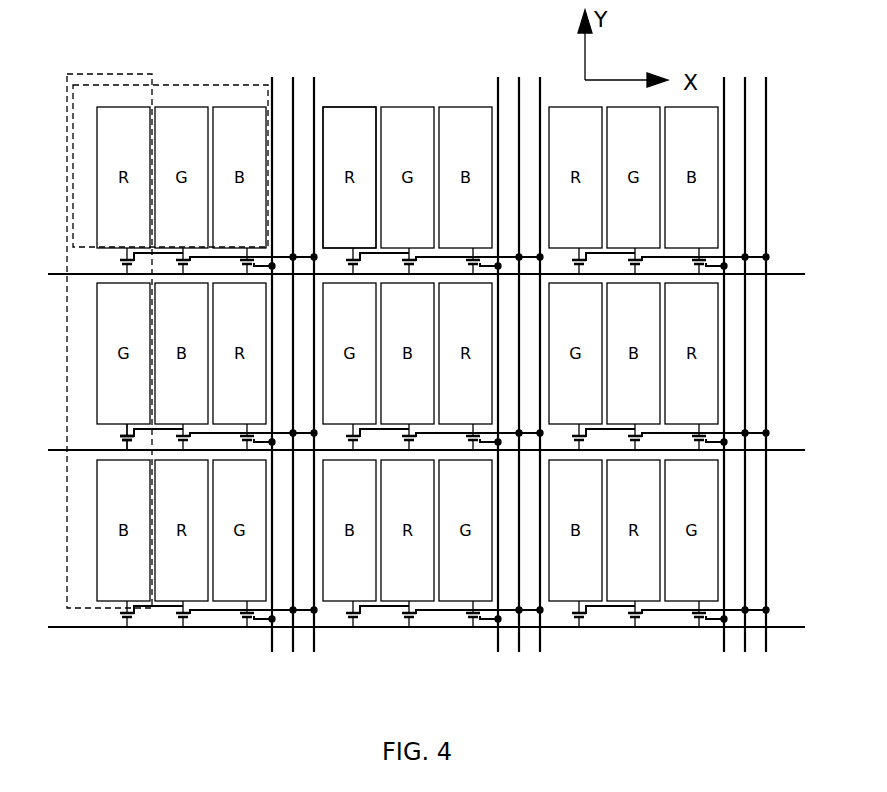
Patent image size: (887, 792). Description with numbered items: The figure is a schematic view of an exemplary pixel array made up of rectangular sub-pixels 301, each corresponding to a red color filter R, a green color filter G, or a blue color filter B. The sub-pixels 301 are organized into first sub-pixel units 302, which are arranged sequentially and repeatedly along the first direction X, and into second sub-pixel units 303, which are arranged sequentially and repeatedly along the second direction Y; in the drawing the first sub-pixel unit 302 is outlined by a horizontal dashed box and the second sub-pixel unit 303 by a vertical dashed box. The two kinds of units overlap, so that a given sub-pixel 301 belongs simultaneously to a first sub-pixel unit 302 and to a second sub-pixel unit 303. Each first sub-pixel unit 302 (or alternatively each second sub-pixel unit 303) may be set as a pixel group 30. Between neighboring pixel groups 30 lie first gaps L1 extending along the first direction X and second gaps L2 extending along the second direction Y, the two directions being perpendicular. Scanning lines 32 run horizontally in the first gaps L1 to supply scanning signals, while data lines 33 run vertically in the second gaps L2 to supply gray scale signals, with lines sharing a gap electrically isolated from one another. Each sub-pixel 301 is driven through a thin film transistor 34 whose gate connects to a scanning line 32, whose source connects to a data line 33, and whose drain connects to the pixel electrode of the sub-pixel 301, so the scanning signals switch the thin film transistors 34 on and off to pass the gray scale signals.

The pixel group 30 is at (170, 135).
The sub-pixel 301 is at (350, 113).
The first sub-pixel unit 302 is at (183, 85).
The second sub-pixel unit 303 is at (120, 74).
The scanning line 32 is at (780, 448).
The data line 33 is at (498, 95).
The thin film transistor 34 is at (121, 438).
The first gap L1 is at (109, 268).
The second gap L2 is at (510, 128).